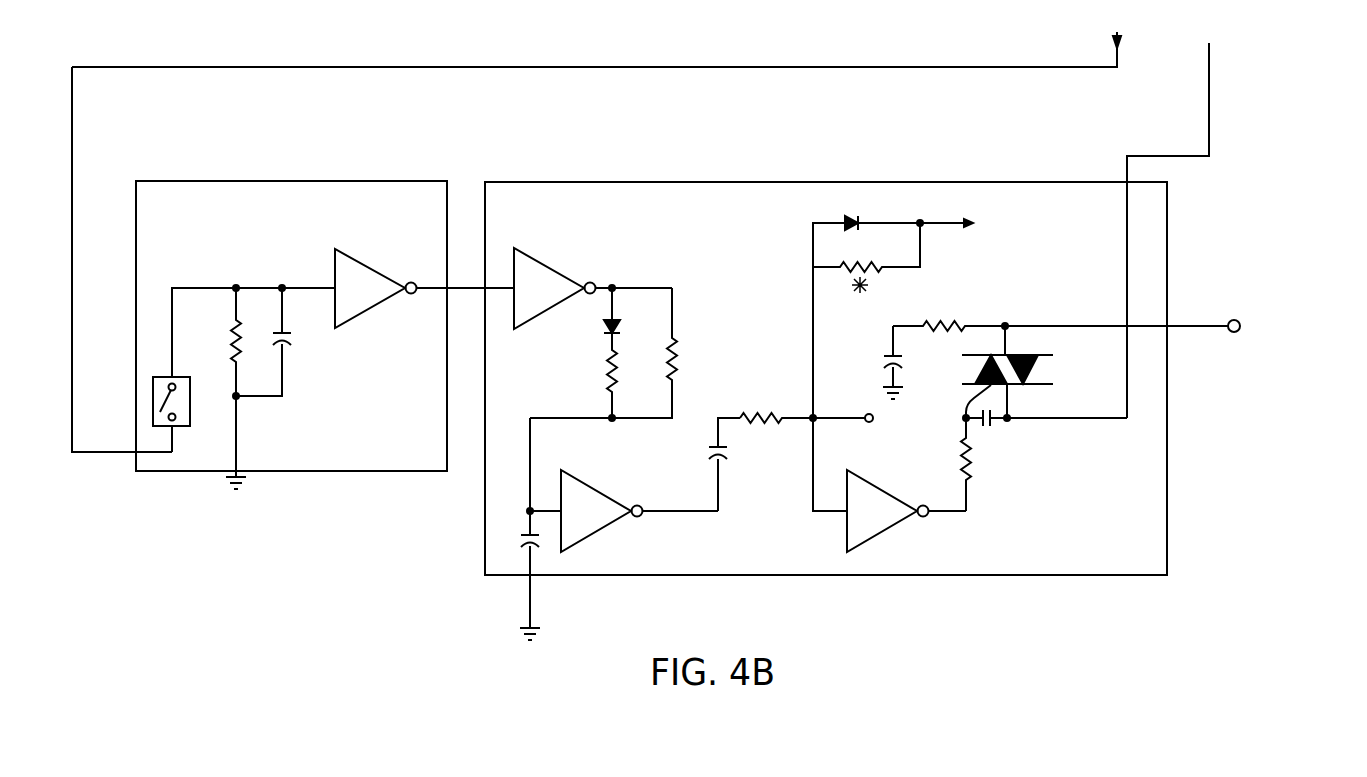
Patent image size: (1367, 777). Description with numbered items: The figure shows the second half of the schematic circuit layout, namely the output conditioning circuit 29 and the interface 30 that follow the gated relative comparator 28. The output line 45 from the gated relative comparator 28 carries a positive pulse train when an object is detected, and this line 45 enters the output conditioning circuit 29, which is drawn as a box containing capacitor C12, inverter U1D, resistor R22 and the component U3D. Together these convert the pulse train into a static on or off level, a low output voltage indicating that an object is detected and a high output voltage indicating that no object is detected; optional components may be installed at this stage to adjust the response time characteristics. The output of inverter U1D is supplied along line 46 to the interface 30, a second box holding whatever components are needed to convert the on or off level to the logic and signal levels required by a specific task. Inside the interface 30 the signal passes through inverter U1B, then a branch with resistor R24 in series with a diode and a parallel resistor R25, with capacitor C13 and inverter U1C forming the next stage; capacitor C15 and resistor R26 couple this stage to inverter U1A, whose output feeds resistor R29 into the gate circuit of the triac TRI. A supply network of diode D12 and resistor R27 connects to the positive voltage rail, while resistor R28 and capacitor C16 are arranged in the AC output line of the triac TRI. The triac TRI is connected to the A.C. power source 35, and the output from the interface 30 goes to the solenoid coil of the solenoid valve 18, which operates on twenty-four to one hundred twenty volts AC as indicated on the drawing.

The solenoid valve 18 is at (1238, 375).
The gated relative comparator 28 is at (1026, 124).
The output conditioning circuit 29 is at (412, 180).
The interface option 30 is at (958, 577).
The A.C. power source 35 is at (1222, 68).
The output line 45 is at (723, 68).
The line 46 is at (467, 287).
The component U3D is at (244, 370).
The resistor R22 is at (219, 387).
The capacitor C12 is at (285, 340).
The inverter U1D is at (424, 288).
The inverter U1B is at (593, 288).
The resistor R24 is at (591, 354).
The resistor R25 is at (626, 353).
The capacitor C13 is at (514, 529).
The inverter U1C is at (624, 511).
The capacitor C15 is at (737, 464).
The resistor R26 is at (806, 405).
The inverter U1A is at (889, 485).
The resistor R29 is at (989, 463).
The triac TR1 TRI is at (1027, 376).
The resistor R28 is at (1060, 314).
The capacitor C16 is at (876, 362).
The diode D12 is at (910, 303).
The resistor R27 is at (866, 258).